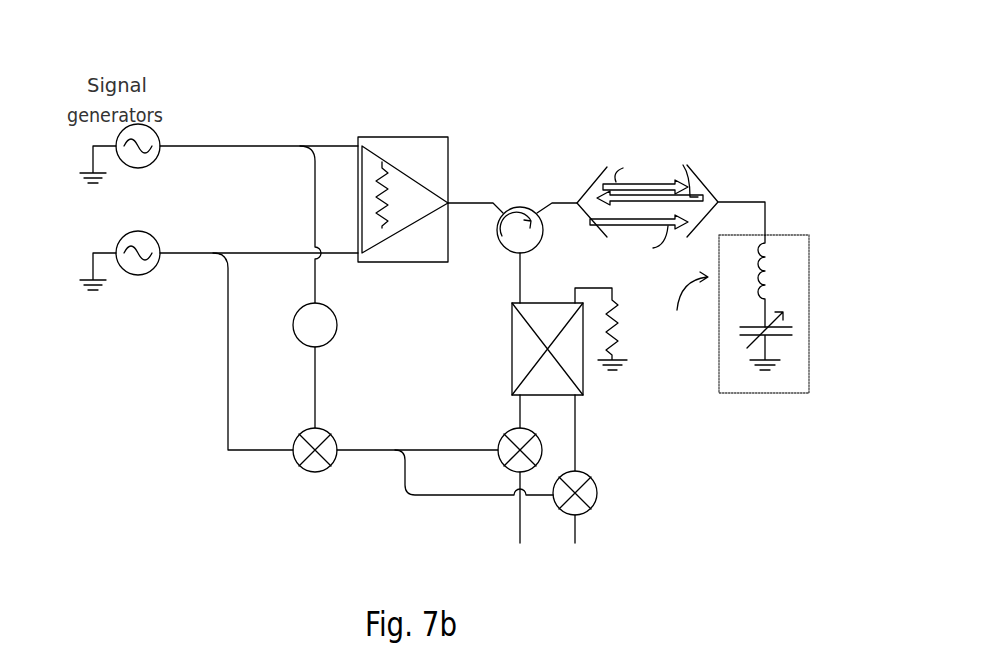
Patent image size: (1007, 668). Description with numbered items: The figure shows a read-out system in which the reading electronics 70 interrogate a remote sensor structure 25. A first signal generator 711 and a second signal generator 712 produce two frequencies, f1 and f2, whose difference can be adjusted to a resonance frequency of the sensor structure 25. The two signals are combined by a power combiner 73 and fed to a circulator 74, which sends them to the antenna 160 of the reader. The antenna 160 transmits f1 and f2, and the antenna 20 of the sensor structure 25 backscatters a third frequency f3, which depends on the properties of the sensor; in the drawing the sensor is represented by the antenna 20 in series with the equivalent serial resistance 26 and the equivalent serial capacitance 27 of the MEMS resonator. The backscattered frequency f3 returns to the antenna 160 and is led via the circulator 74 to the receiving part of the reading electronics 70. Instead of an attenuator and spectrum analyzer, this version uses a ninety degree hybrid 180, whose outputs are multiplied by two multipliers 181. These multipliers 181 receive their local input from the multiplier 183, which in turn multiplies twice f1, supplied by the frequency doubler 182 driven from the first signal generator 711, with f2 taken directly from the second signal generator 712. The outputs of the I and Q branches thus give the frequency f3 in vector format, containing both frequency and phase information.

The reading electronics 70 is at (237, 62).
The first signal generator 711 is at (155, 128).
The second signal generator 712 is at (153, 233).
The power combiner 73 is at (417, 155).
The circulator 74 is at (532, 213).
The antenna 160 is at (600, 170).
The antenna 20 is at (815, 246).
The equivalent serial resistance of the MEMS resonator 26 is at (765, 275).
The equivalent serial capacitance of the MEMS resonator 27 is at (768, 345).
The sensor structure 25 is at (683, 315).
The 90 degree hybrid 180 is at (512, 323).
The multiplier 181 is at (541, 435).
The frequency doubler 182 is at (323, 303).
The multiplier 183 is at (327, 433).